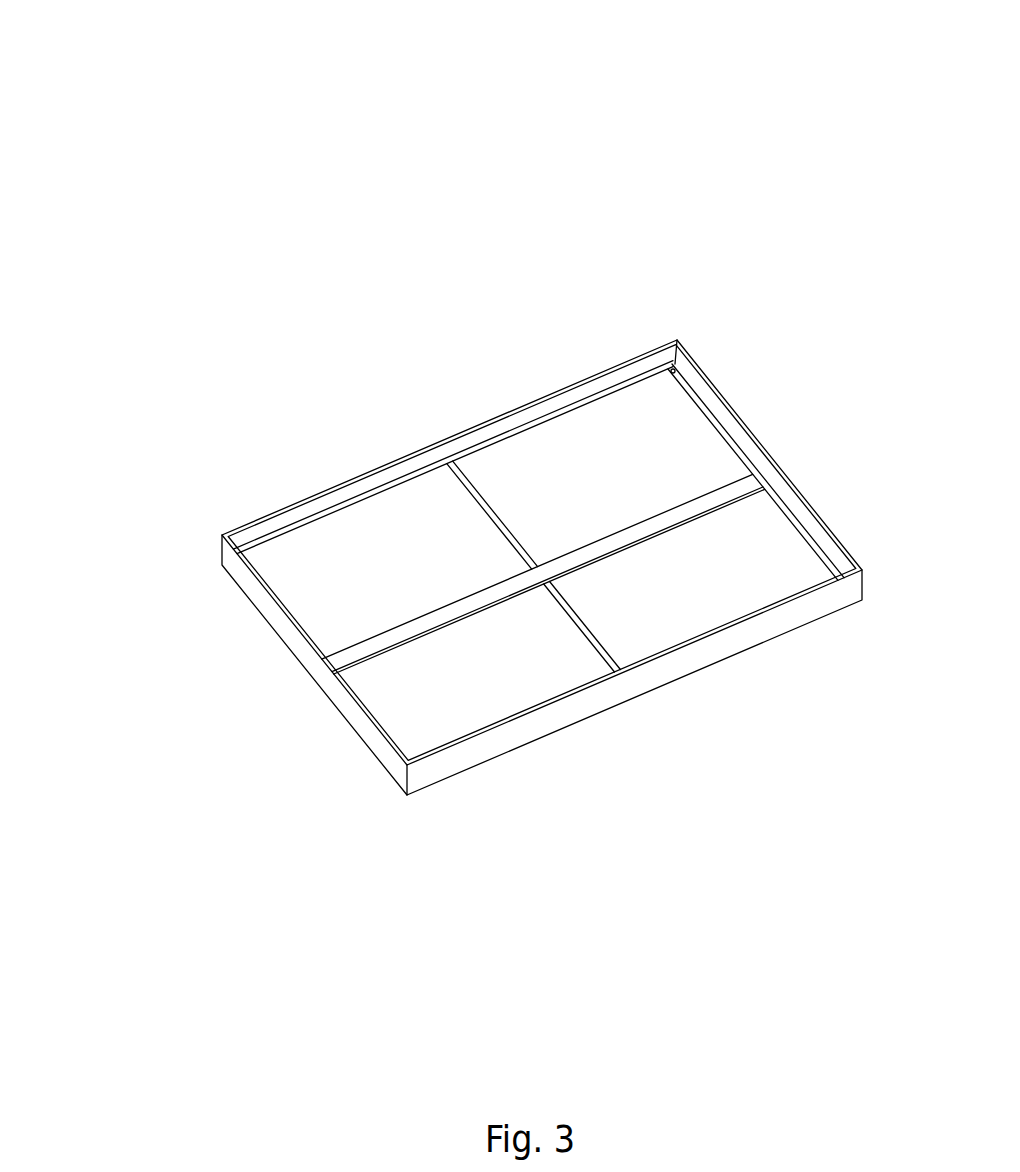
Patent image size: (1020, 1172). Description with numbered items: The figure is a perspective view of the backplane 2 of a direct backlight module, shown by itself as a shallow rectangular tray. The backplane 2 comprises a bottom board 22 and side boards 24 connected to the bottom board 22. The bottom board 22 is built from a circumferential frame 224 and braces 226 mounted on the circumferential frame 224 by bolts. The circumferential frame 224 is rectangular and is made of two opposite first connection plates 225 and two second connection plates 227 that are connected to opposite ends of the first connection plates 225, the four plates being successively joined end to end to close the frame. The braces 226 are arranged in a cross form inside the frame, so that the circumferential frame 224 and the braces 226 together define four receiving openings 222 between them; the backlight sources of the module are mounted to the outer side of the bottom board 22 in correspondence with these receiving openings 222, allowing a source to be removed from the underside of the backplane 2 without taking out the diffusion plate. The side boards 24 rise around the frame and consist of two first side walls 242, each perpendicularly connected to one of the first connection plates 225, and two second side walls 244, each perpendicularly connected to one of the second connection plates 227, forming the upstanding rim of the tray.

The backplane 2 is at (471, 398).
The bottom board 22 is at (531, 487).
The receiving openings 222 is at (345, 565).
The circumferential frame 224 is at (572, 425).
The first connection plates 225 is at (497, 450).
The braces 226 is at (683, 513).
The second connection plates 227 is at (777, 500).
The side boards 24 is at (452, 567).
The first side walls 242 is at (538, 553).
The second side walls 244 is at (243, 575).